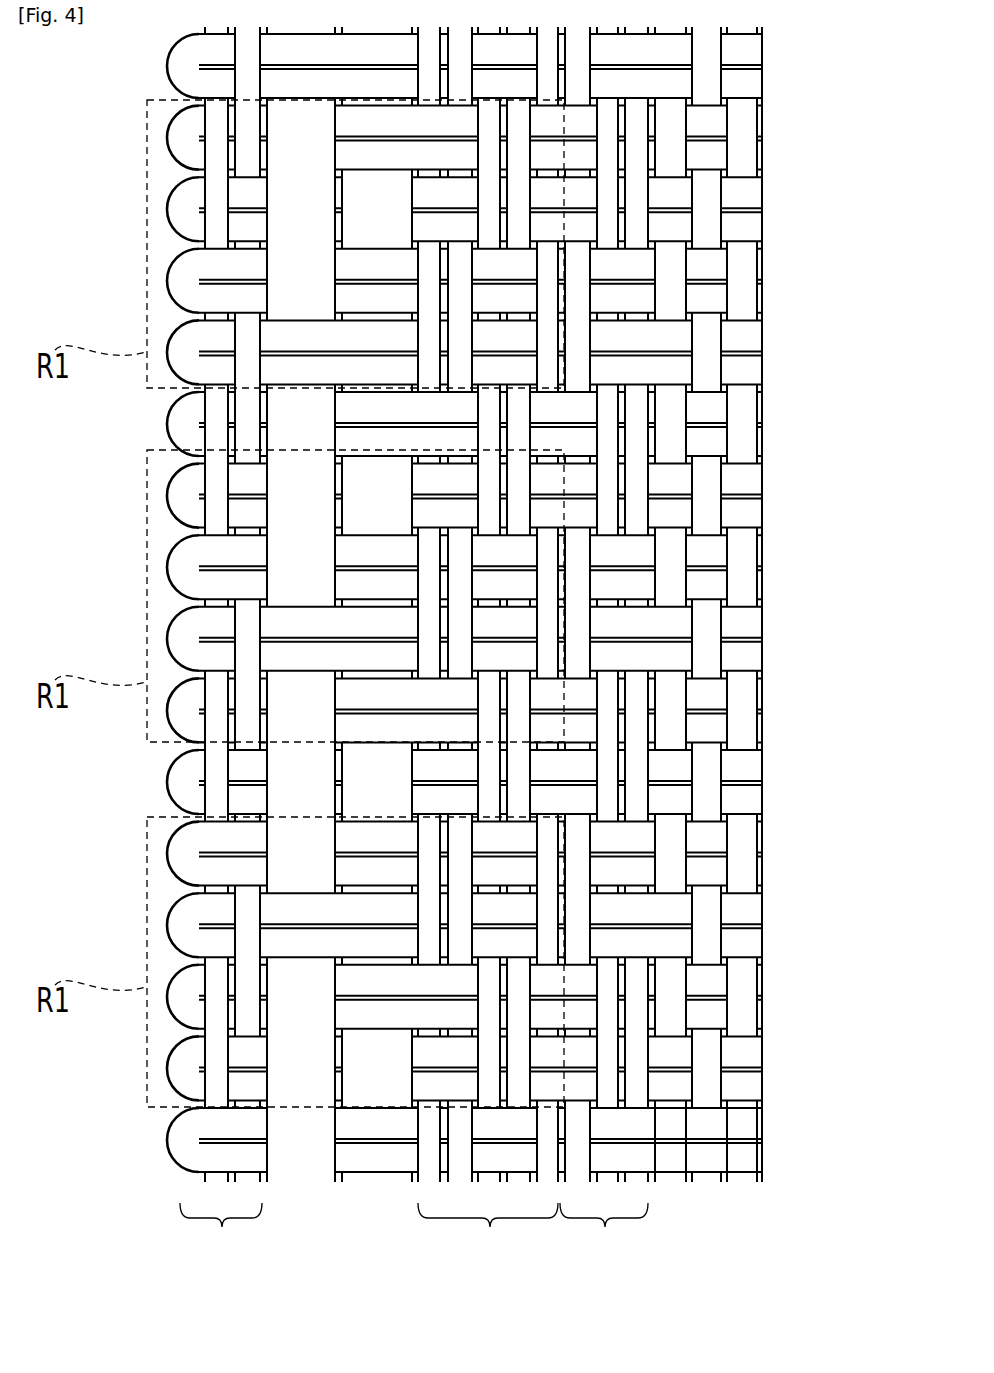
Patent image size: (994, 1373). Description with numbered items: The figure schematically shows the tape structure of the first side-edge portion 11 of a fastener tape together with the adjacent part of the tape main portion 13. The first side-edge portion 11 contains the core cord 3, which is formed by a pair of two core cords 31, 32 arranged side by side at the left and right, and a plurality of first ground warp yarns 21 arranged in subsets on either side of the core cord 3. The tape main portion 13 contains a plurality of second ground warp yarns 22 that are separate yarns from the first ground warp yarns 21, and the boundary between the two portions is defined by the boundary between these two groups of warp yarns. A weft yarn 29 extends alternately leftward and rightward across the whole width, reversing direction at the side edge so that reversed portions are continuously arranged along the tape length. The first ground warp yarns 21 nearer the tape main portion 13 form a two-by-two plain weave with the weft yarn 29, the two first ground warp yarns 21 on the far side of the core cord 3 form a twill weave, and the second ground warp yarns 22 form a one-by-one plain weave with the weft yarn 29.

The first side-edge portion 11 is at (448, 695).
The tape main portion 13 is at (780, 653).
The first ground warp yarns 21 is at (430, 53).
The second ground warp yarns 22 is at (670, 587).
The weft yarn 29 is at (703, 1160).
The core cord 3 is at (249, 652).
The core cord 31 is at (312, 1160).
The core cord 32 is at (375, 779).